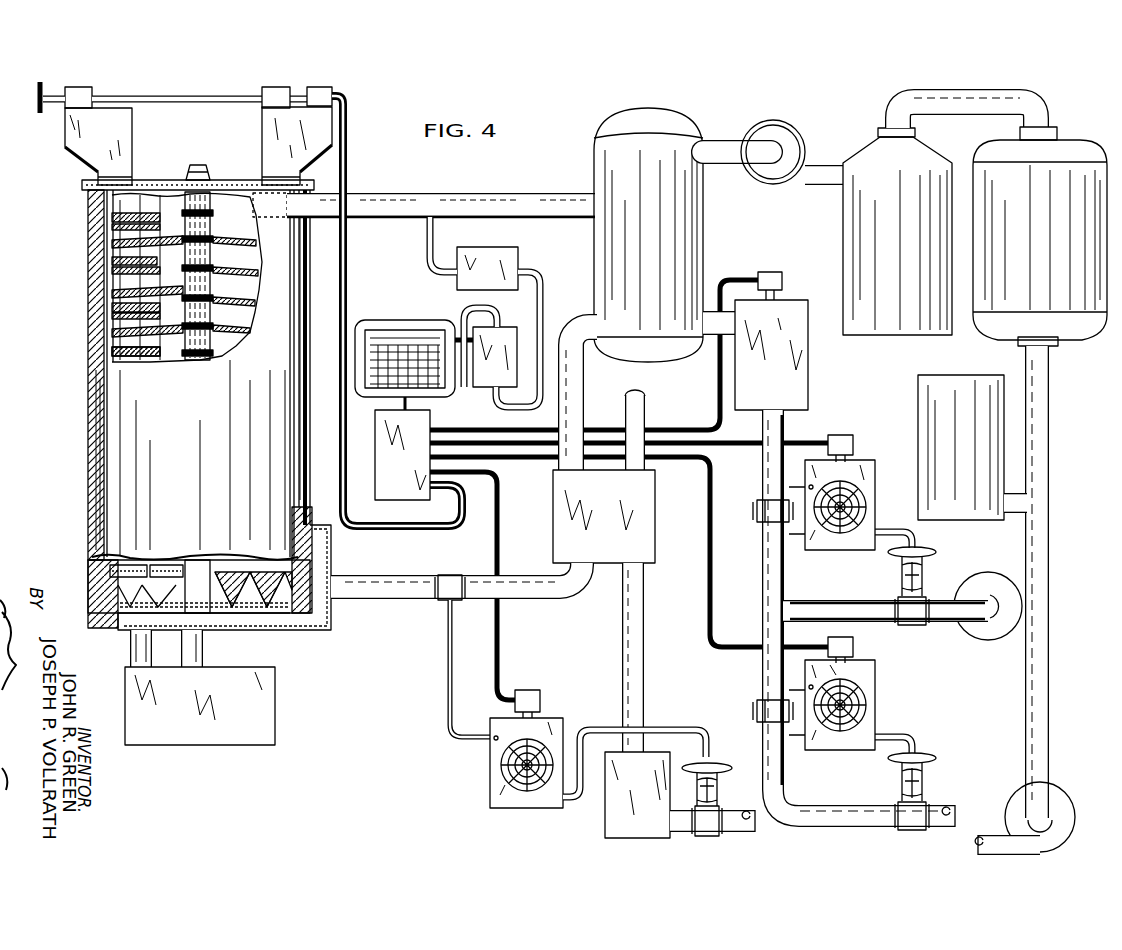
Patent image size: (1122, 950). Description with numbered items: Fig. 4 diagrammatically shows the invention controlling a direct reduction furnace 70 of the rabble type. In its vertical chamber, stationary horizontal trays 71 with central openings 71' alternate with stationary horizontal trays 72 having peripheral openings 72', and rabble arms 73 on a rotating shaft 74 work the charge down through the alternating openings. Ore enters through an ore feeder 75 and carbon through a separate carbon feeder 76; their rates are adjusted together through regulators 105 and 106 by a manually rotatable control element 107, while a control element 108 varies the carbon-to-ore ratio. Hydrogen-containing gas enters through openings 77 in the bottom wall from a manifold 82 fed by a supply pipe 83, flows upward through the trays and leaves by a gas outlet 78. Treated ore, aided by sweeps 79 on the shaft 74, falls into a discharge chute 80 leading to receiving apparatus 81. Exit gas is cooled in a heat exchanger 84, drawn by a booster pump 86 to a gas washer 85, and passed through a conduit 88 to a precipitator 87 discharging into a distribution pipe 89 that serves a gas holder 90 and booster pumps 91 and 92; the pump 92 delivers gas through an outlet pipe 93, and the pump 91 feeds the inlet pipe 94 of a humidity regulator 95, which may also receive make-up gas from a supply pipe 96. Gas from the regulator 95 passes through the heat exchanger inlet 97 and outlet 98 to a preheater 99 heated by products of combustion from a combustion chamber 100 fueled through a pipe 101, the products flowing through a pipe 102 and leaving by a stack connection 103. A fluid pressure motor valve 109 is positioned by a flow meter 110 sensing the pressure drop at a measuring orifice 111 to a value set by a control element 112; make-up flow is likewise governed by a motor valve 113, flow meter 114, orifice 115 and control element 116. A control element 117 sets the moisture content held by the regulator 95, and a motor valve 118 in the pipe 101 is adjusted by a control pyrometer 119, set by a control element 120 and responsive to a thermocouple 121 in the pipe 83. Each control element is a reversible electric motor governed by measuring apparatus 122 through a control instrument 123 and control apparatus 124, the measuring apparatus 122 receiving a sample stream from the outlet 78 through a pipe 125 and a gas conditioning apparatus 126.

The direct reduction furnace 70 is at (104, 405).
The stationary horizontal trays 71 is at (156, 277).
The central openings 71' is at (220, 276).
The stationary horizontal trays 72 is at (117, 267).
The peripheral openings 72' is at (103, 333).
The rabble arms 73 is at (104, 300).
The rotating shaft 74 is at (190, 166).
The ore feeder 75 is at (65, 135).
The carbon feeder 76 is at (266, 137).
The bottom wall openings 77 is at (295, 548).
The gas outlet 78 is at (490, 196).
The sweeps 79 is at (150, 568).
The discharge chute 80 is at (133, 648).
The receiving apparatus 81 is at (125, 692).
The manifold 82 is at (332, 556).
The furnace supply pipe 83 is at (418, 578).
The heat exchanger 84 is at (594, 136).
The gas washer 85 is at (868, 146).
The booster pump 86 is at (766, 124).
The precipitator 87 is at (998, 148).
The conduit 88 is at (962, 90).
The distribution pipe 89 is at (1050, 440).
The gas holder 90 is at (948, 375).
The booster pump 91 is at (976, 584).
The booster pump 92 is at (1012, 796).
The outlet pipe 93 is at (998, 824).
The inlet pipe 94 is at (765, 563).
The humidity regulator 95 is at (808, 372).
The make-up gas supply pipe 96 is at (854, 806).
The heat exchanger inlet 97 is at (712, 338).
The heat exchanger outlet 98 is at (584, 386).
The gas preheater 99 is at (553, 496).
The combustion chamber 100 is at (605, 826).
The fuel supply pipe 101 is at (728, 810).
The combustion products pipe 102 is at (622, 628).
The stack connection 103 is at (646, 403).
The regulator 105 is at (82, 88).
The regulator 106 is at (264, 88).
The manually rotatable control element 107 is at (37, 92).
The control element 108 is at (330, 90).
The fluid pressure motor valve 109 is at (912, 626).
The flow meter 110 is at (862, 468).
The measuring orifice 111 is at (760, 506).
The control element 112 is at (842, 435).
The fluid pressure motor valve 113 is at (908, 832).
The flow meter 114 is at (875, 680).
The measuring orifice 115 is at (762, 706).
The control element 116 is at (853, 642).
The control element 117 is at (778, 272).
The fluid pressure motor valve 118 is at (712, 836).
The control pyrometer 119 is at (490, 757).
The control element 120 is at (536, 692).
The thermocouple 121 is at (446, 606).
The measuring apparatus 122 is at (502, 327).
The control instrument 123 is at (400, 320).
The control apparatus 124 is at (430, 420).
The sample pipe 125 is at (426, 234).
The gas conditioning apparatus 126 is at (490, 250).